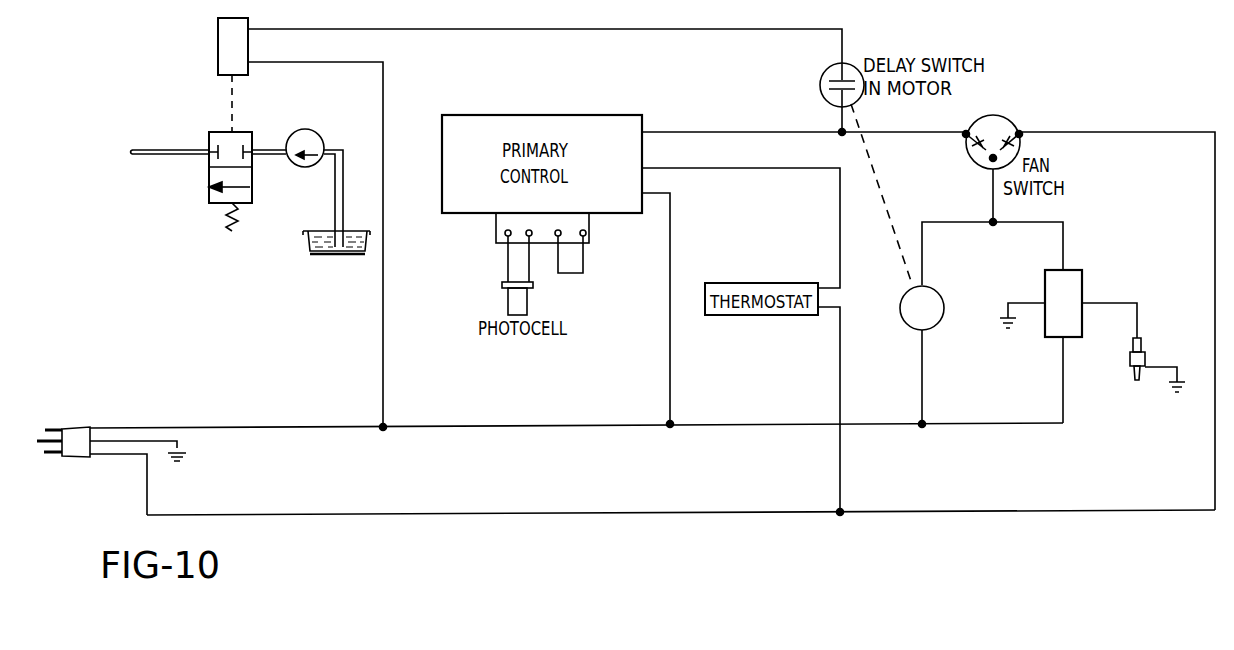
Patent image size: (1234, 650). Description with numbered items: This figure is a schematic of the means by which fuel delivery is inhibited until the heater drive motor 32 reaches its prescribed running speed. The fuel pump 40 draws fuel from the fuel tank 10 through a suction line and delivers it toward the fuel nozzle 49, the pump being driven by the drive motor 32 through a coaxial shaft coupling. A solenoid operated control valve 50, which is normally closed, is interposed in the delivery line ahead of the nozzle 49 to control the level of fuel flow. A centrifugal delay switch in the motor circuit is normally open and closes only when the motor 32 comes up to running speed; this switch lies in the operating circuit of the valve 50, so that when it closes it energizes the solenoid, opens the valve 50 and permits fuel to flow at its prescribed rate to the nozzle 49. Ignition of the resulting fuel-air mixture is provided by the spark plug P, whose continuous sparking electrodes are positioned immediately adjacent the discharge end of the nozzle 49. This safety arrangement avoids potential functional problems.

The solenoid operated control valve 50 is at (211, 98).
The fuel pump 40 is at (305, 129).
The fuel nozzle 49 is at (124, 145).
The fuel tank 10 is at (332, 255).
The drive motor 32 is at (938, 295).
The spark plug P is at (1146, 352).